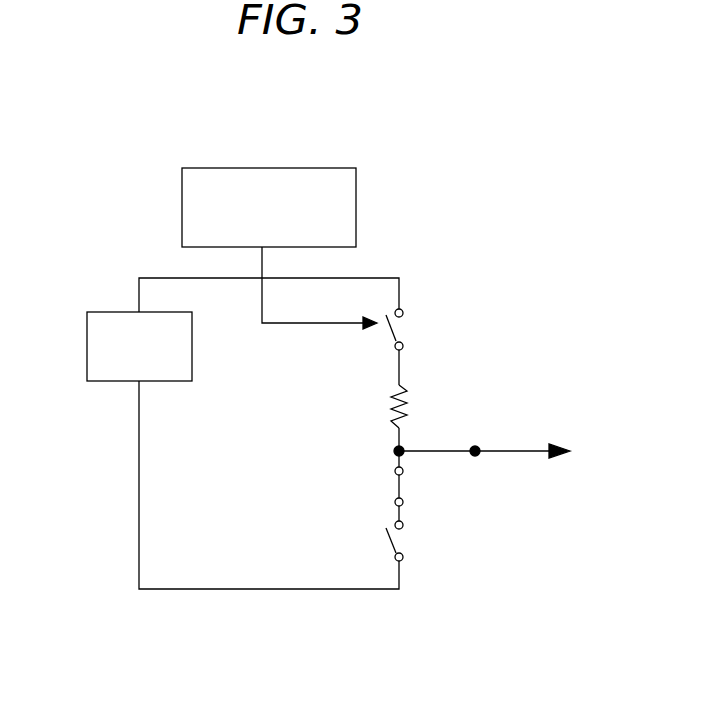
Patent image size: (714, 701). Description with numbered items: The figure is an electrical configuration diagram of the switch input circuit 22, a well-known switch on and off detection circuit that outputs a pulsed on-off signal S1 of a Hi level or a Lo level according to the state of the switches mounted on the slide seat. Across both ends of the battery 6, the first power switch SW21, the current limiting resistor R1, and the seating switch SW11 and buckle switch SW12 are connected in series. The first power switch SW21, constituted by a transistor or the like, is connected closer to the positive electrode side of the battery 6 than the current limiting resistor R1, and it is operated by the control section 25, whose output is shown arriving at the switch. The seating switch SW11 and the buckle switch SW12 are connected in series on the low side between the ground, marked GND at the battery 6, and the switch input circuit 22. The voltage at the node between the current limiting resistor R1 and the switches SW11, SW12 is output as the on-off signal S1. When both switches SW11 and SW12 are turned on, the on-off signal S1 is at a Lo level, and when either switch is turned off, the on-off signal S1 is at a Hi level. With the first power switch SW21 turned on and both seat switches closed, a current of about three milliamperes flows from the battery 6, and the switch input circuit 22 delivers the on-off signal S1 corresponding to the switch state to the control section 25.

The control section 25 is at (356, 198).
The battery 6 is at (105, 312).
The switch input circuit 22 is at (443, 431).
The first power switch SW21 is at (393, 328).
The current limiting resistor R1 is at (388, 410).
The on-off signal S1 is at (476, 447).
The buckle switch SW12 is at (399, 483).
The seating switch SW11 is at (393, 540).
The ground GND is at (238, 485).